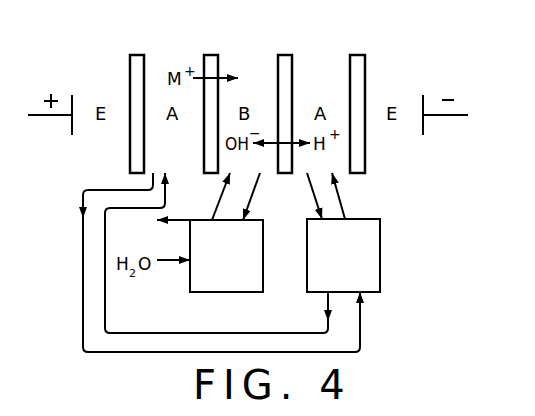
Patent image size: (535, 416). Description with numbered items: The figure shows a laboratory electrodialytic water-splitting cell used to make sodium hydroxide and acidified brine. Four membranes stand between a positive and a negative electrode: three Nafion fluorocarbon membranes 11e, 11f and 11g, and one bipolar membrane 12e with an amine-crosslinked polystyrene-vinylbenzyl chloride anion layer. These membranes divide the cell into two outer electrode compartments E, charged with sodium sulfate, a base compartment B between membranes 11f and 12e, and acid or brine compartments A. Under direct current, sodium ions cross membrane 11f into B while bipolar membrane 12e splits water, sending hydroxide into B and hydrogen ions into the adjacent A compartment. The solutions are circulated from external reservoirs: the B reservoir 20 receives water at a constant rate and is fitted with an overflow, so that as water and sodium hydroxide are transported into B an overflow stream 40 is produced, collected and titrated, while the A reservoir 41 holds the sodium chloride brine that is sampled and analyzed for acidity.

The membrane 11e is at (130, 62).
The membrane 11f is at (208, 56).
The bipolar membrane 12e is at (286, 55).
The membrane 11g is at (358, 55).
The B reservoir 20 is at (237, 263).
The A reservoir 41 is at (352, 263).
The overflow stream 40 is at (179, 219).